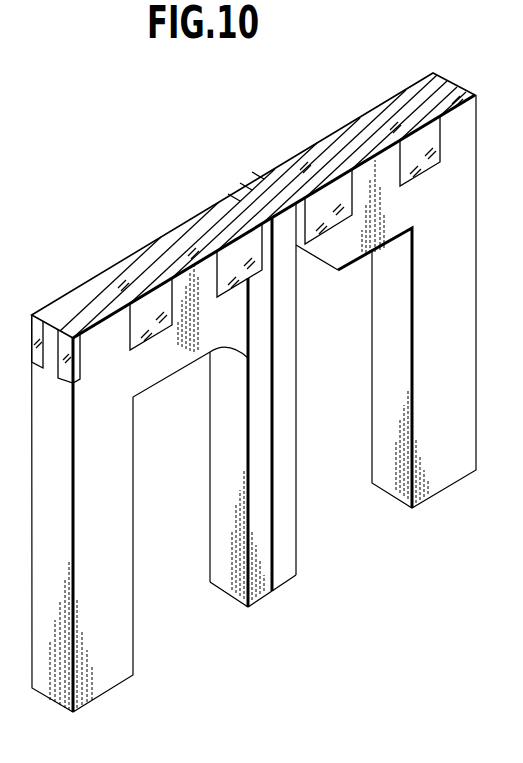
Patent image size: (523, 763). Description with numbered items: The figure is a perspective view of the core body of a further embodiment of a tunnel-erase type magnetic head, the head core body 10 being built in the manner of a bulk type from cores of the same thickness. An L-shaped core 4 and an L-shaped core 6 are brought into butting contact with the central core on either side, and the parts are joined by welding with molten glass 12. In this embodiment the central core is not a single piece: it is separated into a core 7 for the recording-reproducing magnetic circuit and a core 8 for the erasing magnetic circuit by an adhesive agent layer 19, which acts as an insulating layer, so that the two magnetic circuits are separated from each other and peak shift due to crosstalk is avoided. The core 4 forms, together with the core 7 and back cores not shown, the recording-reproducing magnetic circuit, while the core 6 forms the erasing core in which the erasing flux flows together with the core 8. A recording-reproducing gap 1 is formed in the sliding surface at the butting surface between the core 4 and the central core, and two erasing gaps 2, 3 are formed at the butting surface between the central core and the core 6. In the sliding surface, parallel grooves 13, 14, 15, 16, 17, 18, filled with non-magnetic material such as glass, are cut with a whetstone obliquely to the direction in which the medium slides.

The head core body 10 is at (137, 233).
The recording-reproducing gap 1 is at (228, 220).
The erasing gap 2 is at (263, 175).
The erasing gap 3 is at (293, 204).
The core 4 is at (115, 680).
The core 6 is at (455, 475).
The core 7 is at (268, 597).
The core 8 is at (290, 563).
The molten glass 12 is at (232, 346).
The groove 13 is at (43, 312).
The groove 14 is at (118, 273).
The groove 15 is at (197, 230).
The groove 16 is at (318, 145).
The groove 17 is at (388, 105).
The groove 18 is at (453, 90).
The adhesive agent layer 19 is at (272, 578).